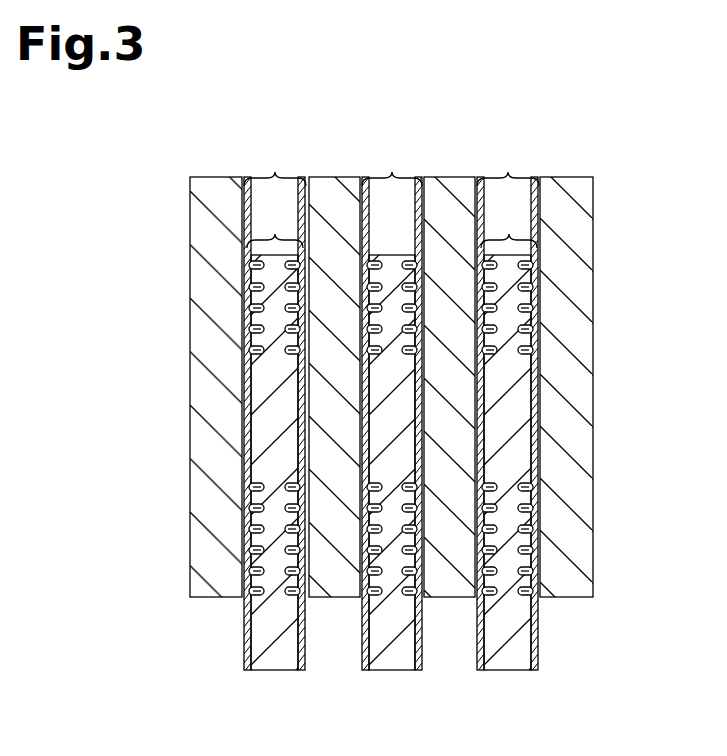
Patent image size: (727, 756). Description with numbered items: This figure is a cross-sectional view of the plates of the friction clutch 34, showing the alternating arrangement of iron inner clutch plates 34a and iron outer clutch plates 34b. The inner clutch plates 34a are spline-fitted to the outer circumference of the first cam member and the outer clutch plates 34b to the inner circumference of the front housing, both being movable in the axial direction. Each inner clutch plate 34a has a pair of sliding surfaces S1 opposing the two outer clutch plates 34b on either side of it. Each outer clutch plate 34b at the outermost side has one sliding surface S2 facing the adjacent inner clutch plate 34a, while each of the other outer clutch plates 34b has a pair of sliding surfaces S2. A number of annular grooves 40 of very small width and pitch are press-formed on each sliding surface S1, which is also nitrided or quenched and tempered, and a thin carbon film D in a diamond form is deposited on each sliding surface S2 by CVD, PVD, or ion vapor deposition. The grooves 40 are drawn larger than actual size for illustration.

The friction clutch 34 is at (629, 204).
The inner clutch plate 34a is at (277, 671).
The outer clutch plate 34b is at (212, 183).
The annular groove 40 is at (381, 257).
The sliding surface S1 is at (246, 619).
The sliding surface S2 is at (392, 223).
The carbon film D is at (391, 162).